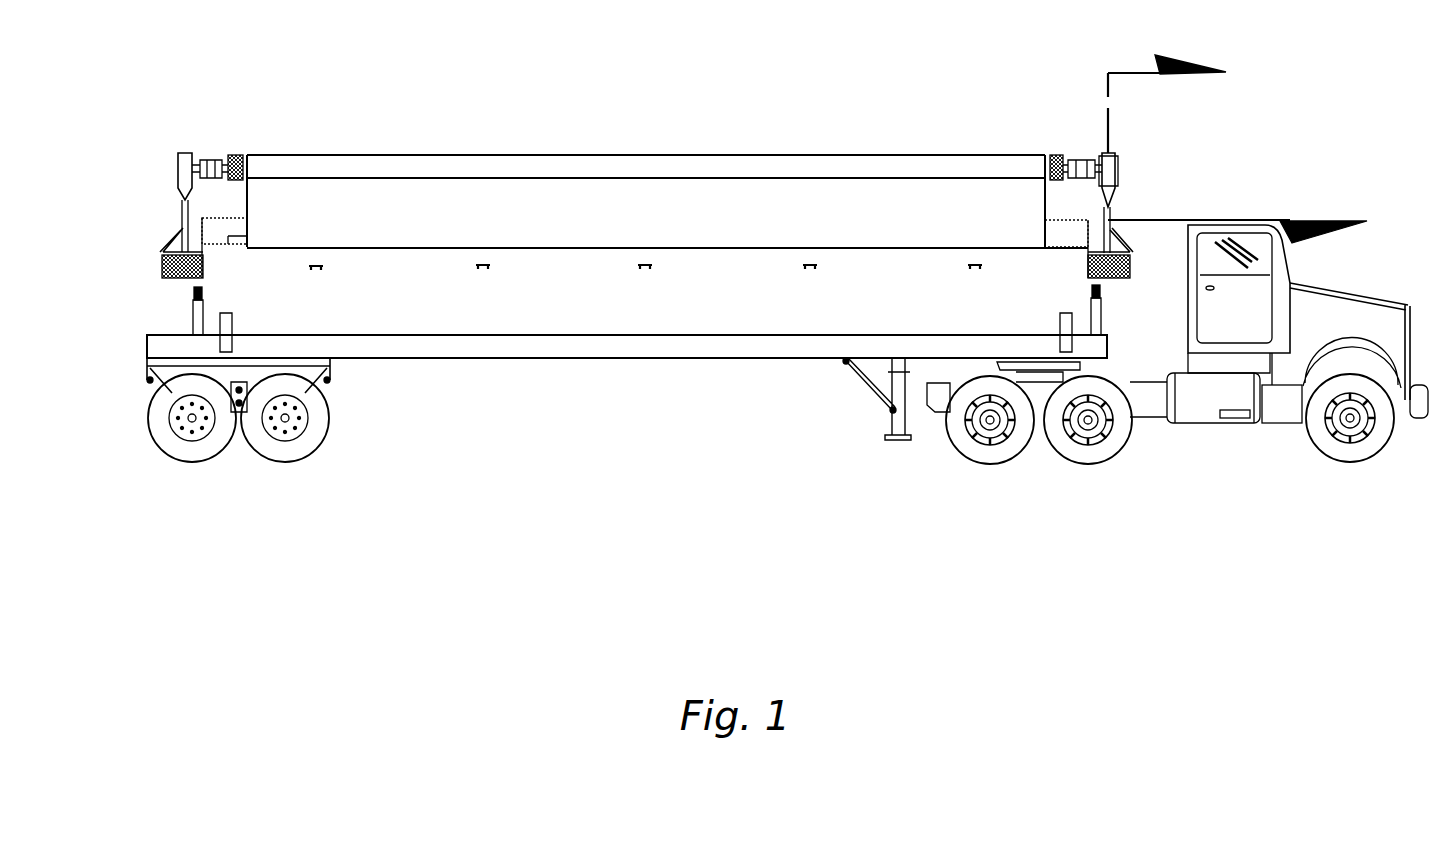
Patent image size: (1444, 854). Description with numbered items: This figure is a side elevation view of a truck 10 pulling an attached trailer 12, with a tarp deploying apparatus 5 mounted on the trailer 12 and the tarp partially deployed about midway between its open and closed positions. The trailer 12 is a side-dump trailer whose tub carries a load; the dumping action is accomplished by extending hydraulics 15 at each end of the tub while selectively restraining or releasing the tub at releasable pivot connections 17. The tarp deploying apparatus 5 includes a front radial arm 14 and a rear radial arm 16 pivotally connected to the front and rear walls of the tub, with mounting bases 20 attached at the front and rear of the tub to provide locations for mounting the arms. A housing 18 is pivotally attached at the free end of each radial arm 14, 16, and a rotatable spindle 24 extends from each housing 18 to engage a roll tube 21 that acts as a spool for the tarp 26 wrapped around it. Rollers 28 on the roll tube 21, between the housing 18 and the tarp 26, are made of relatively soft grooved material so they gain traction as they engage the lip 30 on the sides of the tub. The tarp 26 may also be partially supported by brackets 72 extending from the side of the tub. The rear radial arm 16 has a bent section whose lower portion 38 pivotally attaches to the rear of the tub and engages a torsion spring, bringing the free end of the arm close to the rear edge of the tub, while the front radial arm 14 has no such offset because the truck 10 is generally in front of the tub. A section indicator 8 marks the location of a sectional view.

The tarp deploying apparatus 5 is at (1042, 90).
The section line 8 is at (1251, 149).
The truck 10 is at (1352, 308).
The trailer 12 is at (622, 358).
The front radial arm 14 is at (1112, 208).
The hydraulics 15 is at (190, 321).
The rear radial arm 16 is at (183, 213).
The releasable pivot connections 17 is at (232, 321).
The housing 18 is at (185, 170).
The mounting base 20 is at (205, 273).
The roll tube 21 is at (248, 156).
The rotatable spindle 24 is at (192, 153).
The tarp 26 is at (640, 160).
The roller 28 is at (235, 153).
The lip 30 is at (228, 251).
The lower portion 38 is at (1120, 166).
The bracket 72 is at (318, 269).